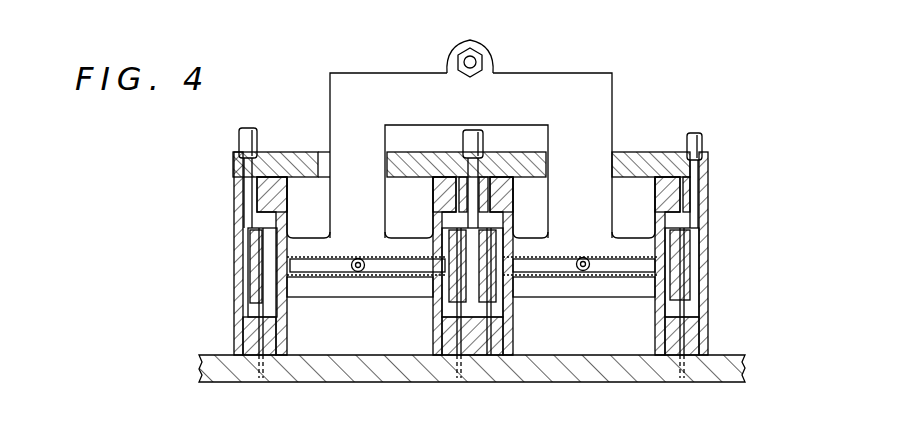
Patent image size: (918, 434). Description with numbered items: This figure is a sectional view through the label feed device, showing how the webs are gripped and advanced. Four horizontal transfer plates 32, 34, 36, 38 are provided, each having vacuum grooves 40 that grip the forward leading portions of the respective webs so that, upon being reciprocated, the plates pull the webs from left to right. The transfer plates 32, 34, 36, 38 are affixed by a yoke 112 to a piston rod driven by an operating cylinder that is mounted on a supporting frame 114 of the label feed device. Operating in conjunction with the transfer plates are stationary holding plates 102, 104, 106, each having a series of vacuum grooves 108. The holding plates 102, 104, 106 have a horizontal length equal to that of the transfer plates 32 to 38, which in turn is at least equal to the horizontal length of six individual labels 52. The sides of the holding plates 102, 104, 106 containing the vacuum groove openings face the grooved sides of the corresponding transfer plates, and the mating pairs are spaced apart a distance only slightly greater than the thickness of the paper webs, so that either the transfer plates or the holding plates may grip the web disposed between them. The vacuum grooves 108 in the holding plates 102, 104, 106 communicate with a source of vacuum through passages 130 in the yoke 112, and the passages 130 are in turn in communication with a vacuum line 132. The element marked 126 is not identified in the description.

The horizontal transfer plate 32 is at (660, 193).
The horizontal transfer plate 34 is at (506, 197).
The horizontal transfer plate 36 is at (440, 193).
The horizontal transfer plate 38 is at (286, 196).
The vacuum groove 40 is at (278, 222).
The label 52 is at (256, 282).
The stationary holding plate 102 is at (240, 251).
The stationary holding plate 104 is at (505, 336).
The stationary holding plate 106 is at (708, 193).
The vacuum groove 108 is at (688, 222).
The yoke 112 is at (607, 90).
The supporting frame 114 is at (650, 150).
The bolt 126 is at (704, 138).
The passage 130 is at (431, 288).
The vacuum line 132 is at (358, 258).